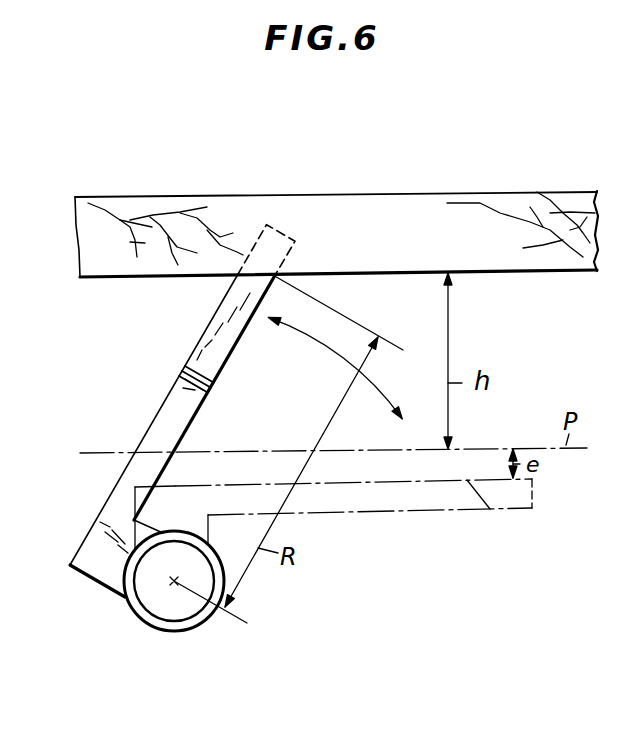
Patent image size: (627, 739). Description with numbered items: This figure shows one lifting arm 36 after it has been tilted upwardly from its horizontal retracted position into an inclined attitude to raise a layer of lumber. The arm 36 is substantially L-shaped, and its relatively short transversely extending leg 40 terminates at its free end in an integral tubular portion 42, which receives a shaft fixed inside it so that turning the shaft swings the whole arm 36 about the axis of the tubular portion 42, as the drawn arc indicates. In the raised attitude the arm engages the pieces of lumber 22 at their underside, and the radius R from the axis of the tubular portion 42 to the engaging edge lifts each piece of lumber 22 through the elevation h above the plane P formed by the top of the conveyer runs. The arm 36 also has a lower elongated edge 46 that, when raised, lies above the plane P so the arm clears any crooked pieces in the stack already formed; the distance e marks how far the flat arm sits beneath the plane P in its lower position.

The piece of lumber 22 is at (510, 256).
The lifting arm 36 is at (142, 422).
The transversely extending leg 40 is at (107, 575).
The tubular portion 42 is at (193, 623).
The lower elongated edge 46 is at (214, 382).